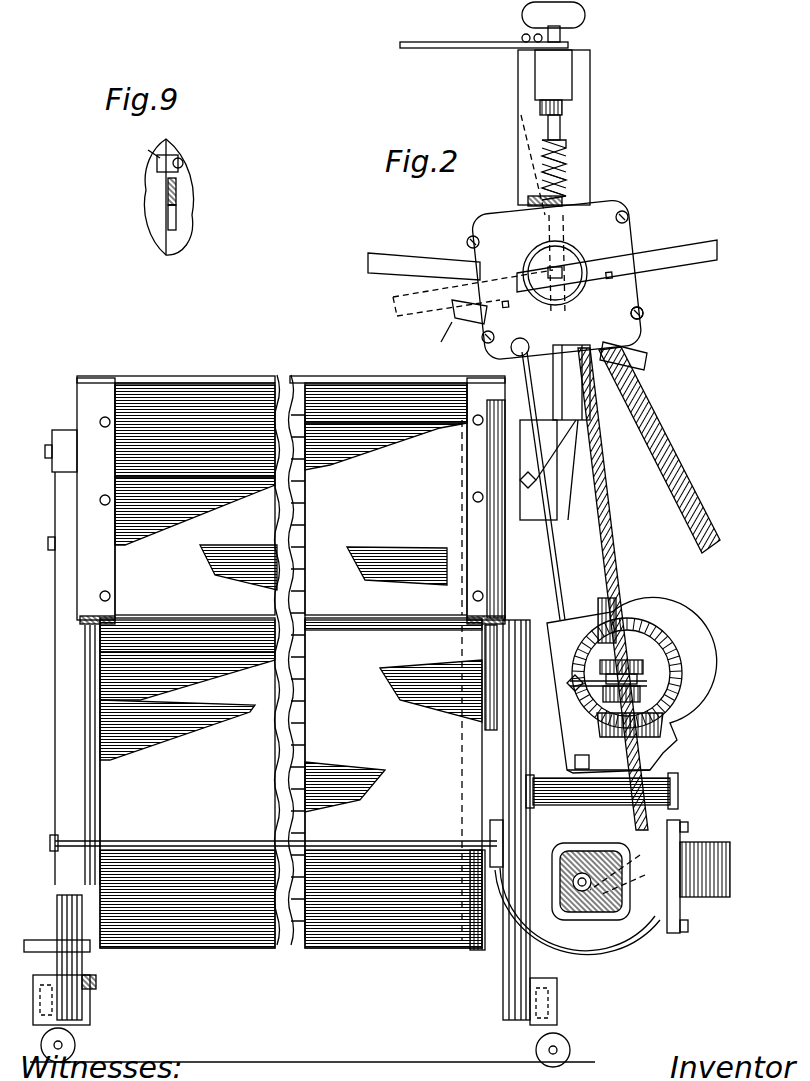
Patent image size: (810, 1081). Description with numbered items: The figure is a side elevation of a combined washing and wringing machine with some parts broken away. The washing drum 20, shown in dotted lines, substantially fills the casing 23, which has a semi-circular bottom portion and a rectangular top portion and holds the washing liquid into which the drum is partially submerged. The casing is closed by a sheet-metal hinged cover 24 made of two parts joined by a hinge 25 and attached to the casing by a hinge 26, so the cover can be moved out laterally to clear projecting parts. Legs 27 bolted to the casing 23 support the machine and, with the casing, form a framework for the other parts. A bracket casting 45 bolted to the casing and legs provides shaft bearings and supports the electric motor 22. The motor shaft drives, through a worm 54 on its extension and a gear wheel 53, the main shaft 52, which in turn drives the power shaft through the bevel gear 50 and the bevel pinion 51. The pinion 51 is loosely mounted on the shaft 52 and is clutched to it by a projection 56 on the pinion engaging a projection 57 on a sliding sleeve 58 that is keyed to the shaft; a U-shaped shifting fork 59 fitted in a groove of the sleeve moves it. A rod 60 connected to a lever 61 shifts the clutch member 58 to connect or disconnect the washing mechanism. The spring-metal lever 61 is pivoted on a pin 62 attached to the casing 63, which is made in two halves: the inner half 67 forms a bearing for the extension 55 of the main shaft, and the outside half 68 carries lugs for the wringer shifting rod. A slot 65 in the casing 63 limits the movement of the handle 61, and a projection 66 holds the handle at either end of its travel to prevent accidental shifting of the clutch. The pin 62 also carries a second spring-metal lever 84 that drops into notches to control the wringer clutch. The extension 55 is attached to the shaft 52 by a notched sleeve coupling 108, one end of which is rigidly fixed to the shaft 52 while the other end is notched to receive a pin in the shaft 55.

In FIG. 2, the washing drum 20 is at (300, 508).
In FIG. 2, the electric motor 22 is at (638, 958).
In FIG. 2, the casing 23 is at (272, 952).
In FIG. 2, the hinged cover 24 is at (292, 378).
In FIG. 2, the hinge 25 is at (152, 378).
In FIG. 2, the hinge 26 is at (78, 379).
In FIG. 2, the legs 27 is at (75, 968).
In FIG. 2, the bracket casting 45 is at (573, 573).
In FIG. 2, the bevel gear 50 is at (668, 648).
In FIG. 2, the bevel pinion 51 is at (664, 733).
In FIG. 2, the main shaft 52 is at (650, 626).
In FIG. 2, the gear wheel 53 is at (662, 873).
In FIG. 2, the worm 54 is at (602, 807).
In FIG. 2, the extension of the shaft 55 is at (596, 481).
In FIG. 2, the projection 56 is at (664, 718).
In FIG. 2, the projection 57 is at (640, 697).
In FIG. 2, the sliding sleeve 58 is at (643, 668).
In FIG. 2, the U-shaped shifting fork 59 is at (645, 640).
In FIG. 2, the rod 60 is at (552, 563).
In FIG. 9, the lever 61 is at (178, 193).
In FIG. 2, the lever 61 is at (411, 261).
In FIG. 2, the pin 62 is at (561, 268).
In FIG. 2, the casing 63 is at (630, 297).
In FIG. 9, the slot 65 is at (172, 230).
In FIG. 9, the projection 66 is at (167, 205).
In FIG. 9, the inner half of the casing 67 is at (183, 158).
In FIG. 9, the outside half of the casing 68 is at (148, 150).
In FIG. 2, the outside half of the casing 68 is at (492, 224).
In FIG. 2, the lever 84 is at (672, 254).
In FIG. 2, the coupling 108 is at (625, 614).